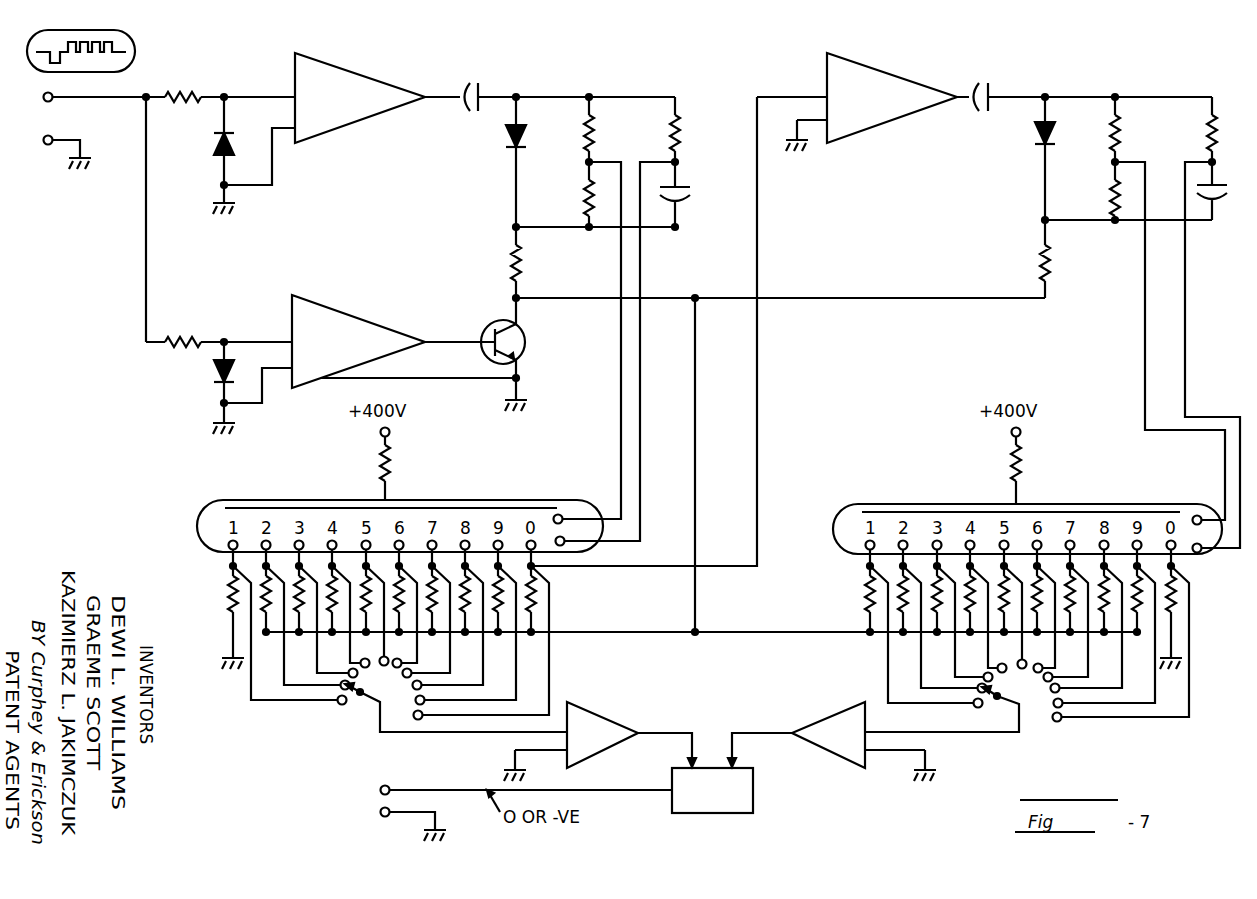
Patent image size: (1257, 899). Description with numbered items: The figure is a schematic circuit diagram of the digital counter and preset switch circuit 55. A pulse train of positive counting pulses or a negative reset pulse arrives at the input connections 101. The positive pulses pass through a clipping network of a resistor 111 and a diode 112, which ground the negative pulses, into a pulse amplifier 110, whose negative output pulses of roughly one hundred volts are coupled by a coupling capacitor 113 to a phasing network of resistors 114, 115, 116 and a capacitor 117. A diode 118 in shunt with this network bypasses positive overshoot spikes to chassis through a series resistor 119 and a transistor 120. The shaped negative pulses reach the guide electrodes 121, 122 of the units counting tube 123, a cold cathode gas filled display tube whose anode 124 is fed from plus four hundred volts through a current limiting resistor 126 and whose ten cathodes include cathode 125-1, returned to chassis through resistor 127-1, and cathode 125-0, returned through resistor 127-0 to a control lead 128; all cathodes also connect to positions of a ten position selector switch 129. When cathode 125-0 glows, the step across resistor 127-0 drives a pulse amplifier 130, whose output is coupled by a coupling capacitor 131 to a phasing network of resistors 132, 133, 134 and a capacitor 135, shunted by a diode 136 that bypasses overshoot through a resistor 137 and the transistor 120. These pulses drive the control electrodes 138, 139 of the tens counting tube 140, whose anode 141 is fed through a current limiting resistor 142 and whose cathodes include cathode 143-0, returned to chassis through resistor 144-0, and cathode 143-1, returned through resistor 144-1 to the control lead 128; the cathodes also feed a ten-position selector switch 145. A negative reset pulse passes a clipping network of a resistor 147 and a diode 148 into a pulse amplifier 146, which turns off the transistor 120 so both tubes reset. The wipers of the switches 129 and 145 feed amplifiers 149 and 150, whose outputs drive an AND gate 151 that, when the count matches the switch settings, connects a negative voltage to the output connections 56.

The digital counter and preset switch circuit 55 is at (910, 348).
The output connections 56 is at (380, 790).
The input connections 101 is at (83, 72).
The pulse amplifier 110 is at (352, 131).
The resistor 111 is at (176, 95).
The diode 112 is at (211, 148).
The coupling capacitor 113 is at (466, 89).
The resistor 114 is at (594, 132).
The resistor 115 is at (680, 132).
The resistor 116 is at (583, 194).
The capacitor 117 is at (691, 197).
The diode 118 is at (505, 136).
The resistor 119 is at (508, 262).
The transistor 120 is at (491, 330).
The guide electrode 121 is at (561, 512).
The guide electrode 122 is at (570, 548).
The units counting tube 123 is at (490, 500).
The anode 124 is at (428, 506).
The cathode 125-1 is at (228, 556).
The cathode 125-0 is at (540, 566).
The current limiting resistor 126 is at (392, 458).
The resistor 127-1 is at (226, 596).
The resistor 127-0 is at (540, 597).
The control lead 128 is at (698, 610).
The ten position selector switch 129 is at (380, 719).
The pulse amplifier 130 is at (880, 132).
The coupling capacitor 131 is at (977, 89).
The resistor 132 is at (1120, 132).
The resistor 133 is at (1206, 142).
The resistor 134 is at (1108, 192).
The capacitor 135 is at (1216, 210).
The diode 136 is at (1034, 135).
The resistor 137 is at (1054, 262).
The control electrode 138 is at (1197, 512).
The control electrode 139 is at (1199, 556).
The tens counting tube 140 is at (1097, 504).
The anode 141 is at (1047, 510).
The current limiting resistor 142 is at (1008, 456).
The cathode 143-1 is at (866, 558).
The cathode 143-0 is at (1181, 568).
The resistor 144-1 is at (862, 596).
The resistor 144-0 is at (1178, 610).
The ten-position selector switch 145 is at (1022, 731).
The pulse amplifier 146 is at (330, 312).
The resistor 147 is at (174, 337).
The diode 148 is at (211, 370).
The amplifier 149 is at (601, 719).
The amplifier 150 is at (843, 719).
The AND gate 151 is at (755, 803).